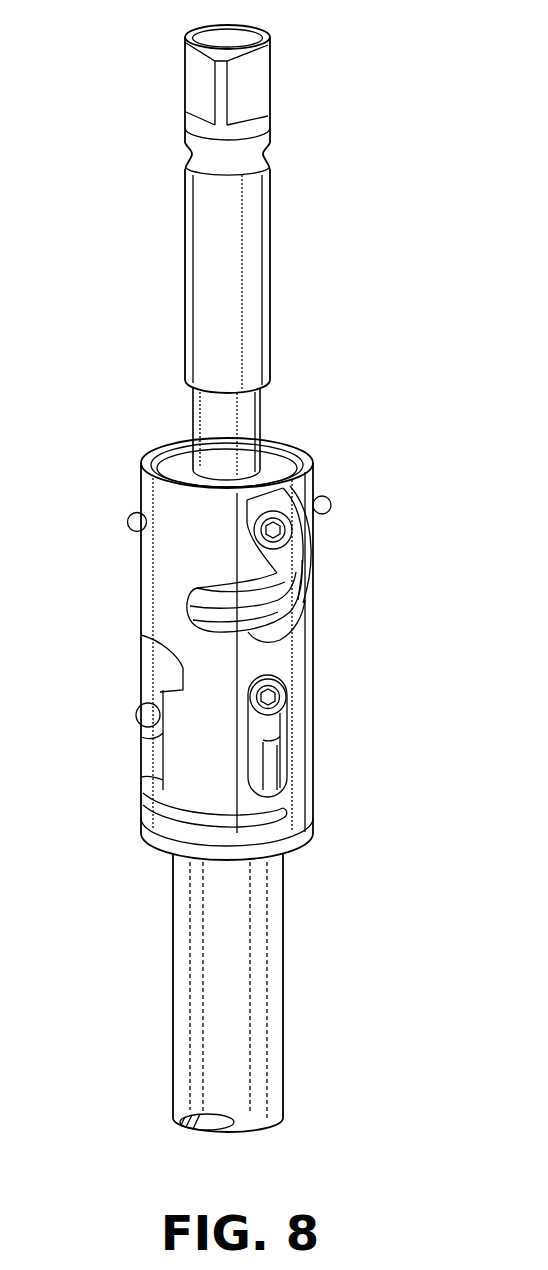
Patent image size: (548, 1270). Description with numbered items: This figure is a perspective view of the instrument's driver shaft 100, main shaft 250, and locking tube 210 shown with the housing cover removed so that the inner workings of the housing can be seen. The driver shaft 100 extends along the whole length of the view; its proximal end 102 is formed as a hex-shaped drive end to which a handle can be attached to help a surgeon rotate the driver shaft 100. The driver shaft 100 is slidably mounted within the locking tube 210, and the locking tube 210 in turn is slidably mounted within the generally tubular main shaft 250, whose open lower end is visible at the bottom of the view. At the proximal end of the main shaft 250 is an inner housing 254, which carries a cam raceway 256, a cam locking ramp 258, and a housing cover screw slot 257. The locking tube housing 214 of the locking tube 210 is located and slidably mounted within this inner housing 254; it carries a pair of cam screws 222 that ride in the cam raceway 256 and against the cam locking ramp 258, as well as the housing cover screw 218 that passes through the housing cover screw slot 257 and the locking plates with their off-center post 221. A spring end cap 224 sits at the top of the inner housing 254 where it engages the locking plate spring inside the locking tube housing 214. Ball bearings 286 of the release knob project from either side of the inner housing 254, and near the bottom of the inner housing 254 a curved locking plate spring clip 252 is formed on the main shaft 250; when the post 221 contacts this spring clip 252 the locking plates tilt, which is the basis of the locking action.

The proximal end 102 is at (270, 80).
The driver shaft 100 is at (278, 270).
The spring end cap 224 is at (273, 455).
The cam screws 222 is at (292, 512).
The ball bearings 286 is at (127, 522).
The cam raceway 256 is at (292, 533).
The locking tube housing 214 is at (200, 600).
The cam locking ramp 258 is at (292, 632).
The inner housing 254 is at (314, 648).
The post 221 is at (143, 715).
The housing cover screw 218 is at (288, 694).
The housing cover screw slot 257 is at (289, 757).
The locking plate spring clip 252 is at (152, 840).
The main shaft 250 is at (288, 1011).
The locking tube 210 is at (268, 927).